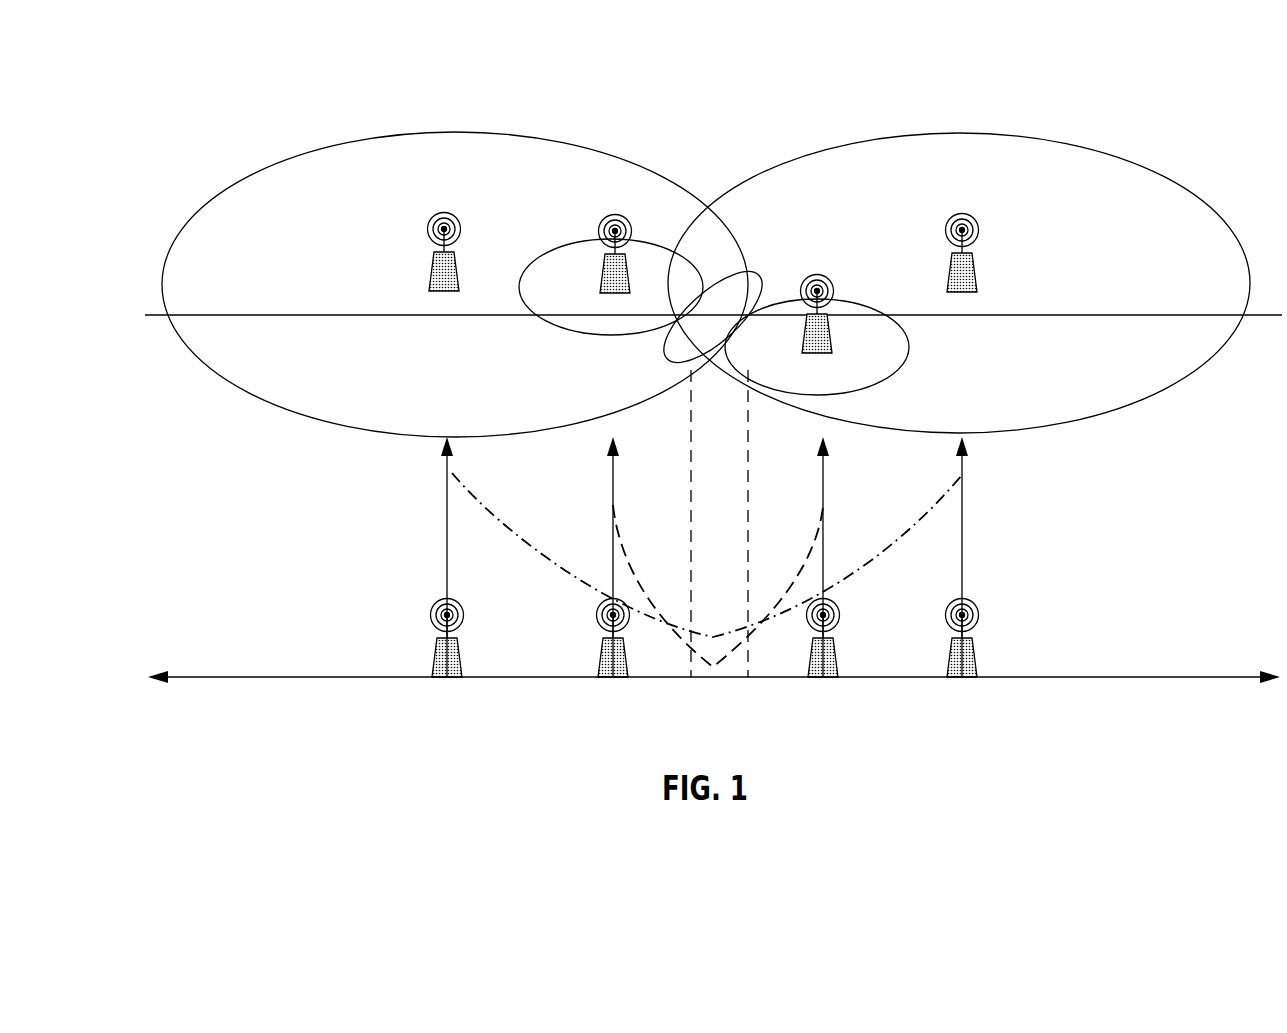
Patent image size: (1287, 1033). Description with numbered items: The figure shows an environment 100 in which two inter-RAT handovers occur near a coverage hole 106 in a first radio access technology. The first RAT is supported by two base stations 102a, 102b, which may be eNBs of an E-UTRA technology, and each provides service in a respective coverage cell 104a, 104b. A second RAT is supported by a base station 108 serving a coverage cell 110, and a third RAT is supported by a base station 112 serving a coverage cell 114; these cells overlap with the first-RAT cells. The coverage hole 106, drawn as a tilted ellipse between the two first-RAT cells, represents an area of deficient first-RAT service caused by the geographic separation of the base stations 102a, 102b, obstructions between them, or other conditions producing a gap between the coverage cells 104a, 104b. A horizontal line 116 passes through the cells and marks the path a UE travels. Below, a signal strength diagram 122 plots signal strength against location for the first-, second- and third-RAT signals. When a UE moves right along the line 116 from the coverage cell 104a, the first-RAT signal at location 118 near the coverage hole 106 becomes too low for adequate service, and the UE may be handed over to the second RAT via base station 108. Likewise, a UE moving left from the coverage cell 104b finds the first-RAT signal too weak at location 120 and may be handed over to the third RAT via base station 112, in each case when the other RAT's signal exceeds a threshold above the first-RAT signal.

The environment 100 is at (353, 118).
The base station 102a is at (630, 285).
The base station 102b is at (834, 346).
The coverage cell 104a is at (575, 240).
The coverage cell 104b is at (858, 300).
The coverage hole 106 is at (753, 270).
The base station 108 is at (433, 275).
The coverage cell 110 is at (262, 172).
The base station 112 is at (975, 270).
The coverage cell 114 is at (1133, 162).
The line 116 is at (1180, 314).
The location 118 is at (688, 680).
The location 120 is at (751, 680).
The signal strength diagram 122 is at (281, 512).